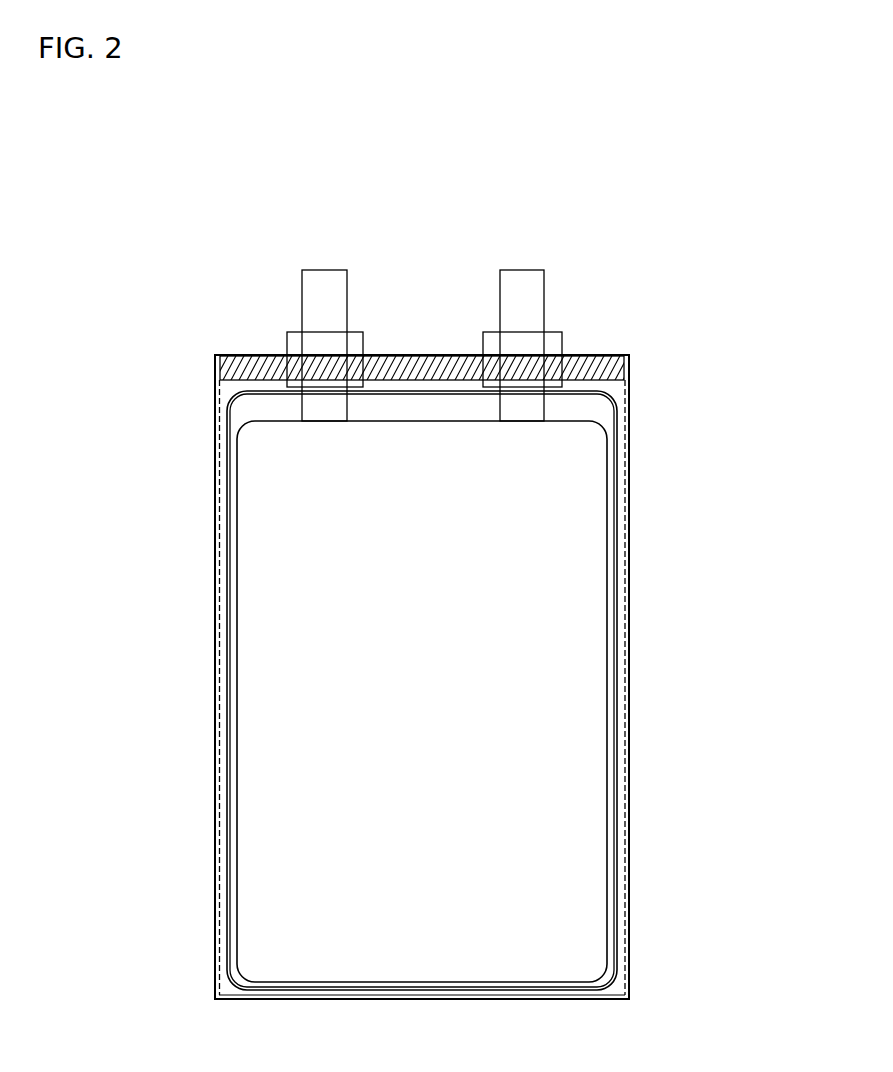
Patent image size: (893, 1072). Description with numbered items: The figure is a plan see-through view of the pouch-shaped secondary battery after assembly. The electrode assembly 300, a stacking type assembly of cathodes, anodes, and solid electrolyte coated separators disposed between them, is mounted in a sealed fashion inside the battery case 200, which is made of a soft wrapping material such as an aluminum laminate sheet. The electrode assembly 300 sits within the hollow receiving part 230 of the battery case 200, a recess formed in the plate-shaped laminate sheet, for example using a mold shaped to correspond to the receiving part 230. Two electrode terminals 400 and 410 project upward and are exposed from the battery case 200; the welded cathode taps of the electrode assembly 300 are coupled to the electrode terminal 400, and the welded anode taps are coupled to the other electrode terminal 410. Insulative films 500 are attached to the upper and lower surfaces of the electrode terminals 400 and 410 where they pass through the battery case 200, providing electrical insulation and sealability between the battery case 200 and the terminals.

The battery case 200 is at (629, 861).
The receiving part 230 is at (416, 408).
The electrode assembly 300 is at (272, 695).
The electrode terminal 400 is at (323, 270).
The electrode terminal 410 is at (524, 268).
The insulative film 500 is at (285, 332).